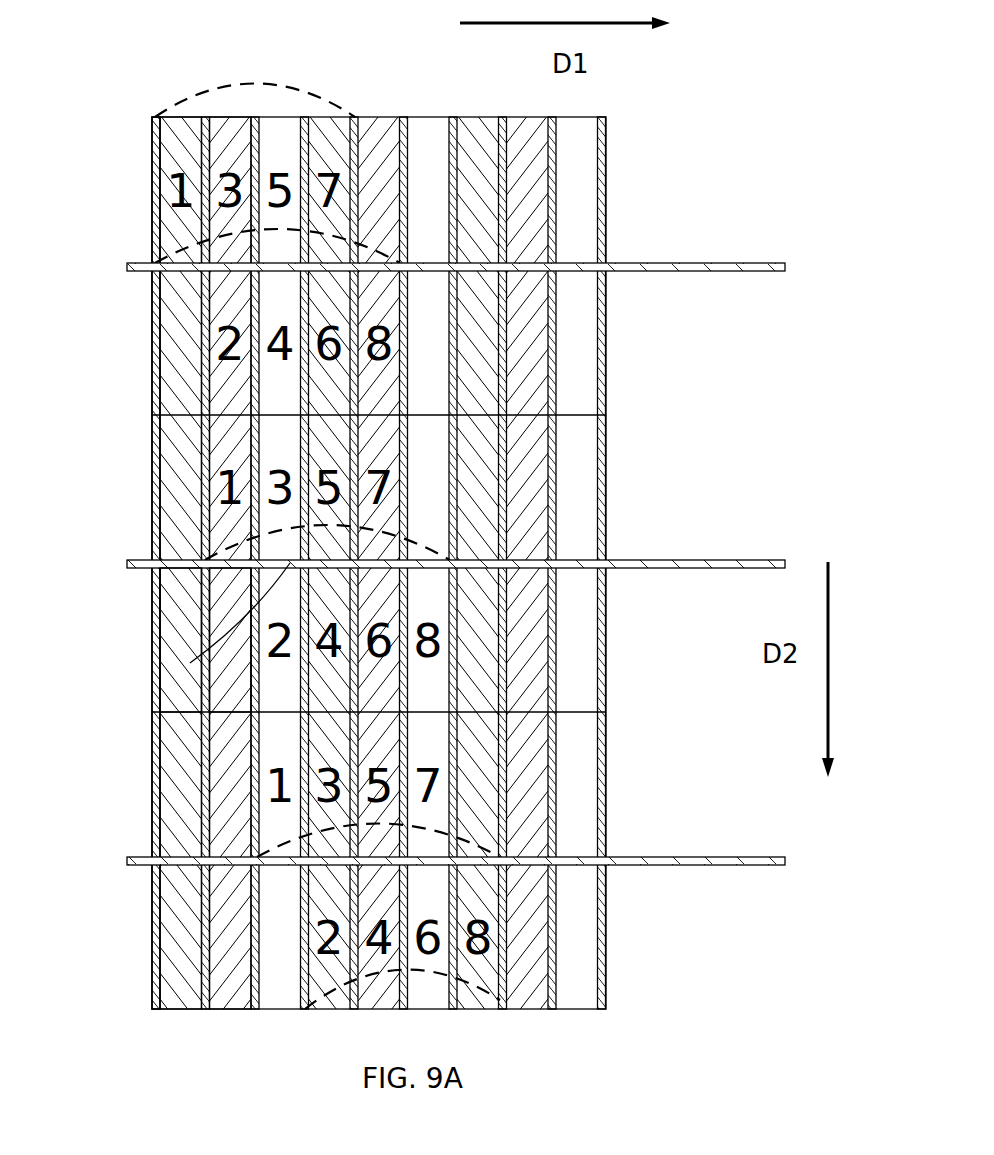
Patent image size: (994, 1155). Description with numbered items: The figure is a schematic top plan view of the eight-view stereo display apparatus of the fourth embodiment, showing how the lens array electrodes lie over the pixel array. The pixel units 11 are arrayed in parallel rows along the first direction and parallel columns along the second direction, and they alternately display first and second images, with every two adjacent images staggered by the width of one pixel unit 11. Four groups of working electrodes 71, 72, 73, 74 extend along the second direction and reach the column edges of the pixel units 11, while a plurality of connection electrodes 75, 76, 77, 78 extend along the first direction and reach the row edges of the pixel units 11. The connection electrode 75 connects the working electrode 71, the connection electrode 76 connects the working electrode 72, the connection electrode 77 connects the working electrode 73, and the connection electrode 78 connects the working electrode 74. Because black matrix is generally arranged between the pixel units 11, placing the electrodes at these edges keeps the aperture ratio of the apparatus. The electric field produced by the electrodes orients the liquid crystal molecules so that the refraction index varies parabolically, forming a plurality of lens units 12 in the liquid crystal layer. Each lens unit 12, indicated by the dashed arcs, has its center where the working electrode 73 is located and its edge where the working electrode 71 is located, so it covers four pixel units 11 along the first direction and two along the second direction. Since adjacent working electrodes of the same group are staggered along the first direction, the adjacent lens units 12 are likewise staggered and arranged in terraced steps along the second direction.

The pixel unit 11 is at (580, 178).
The lens unit 12 is at (323, 92).
The working electrode 71 is at (157, 153).
The working electrode 72 is at (160, 117).
The working electrode 73 is at (243, 119).
The working electrode 74 is at (175, 235).
The connection electrode 75 is at (130, 560).
The connection electrode 76 is at (170, 582).
The connection electrode 77 is at (247, 578).
The connection electrode 78 is at (190, 663).